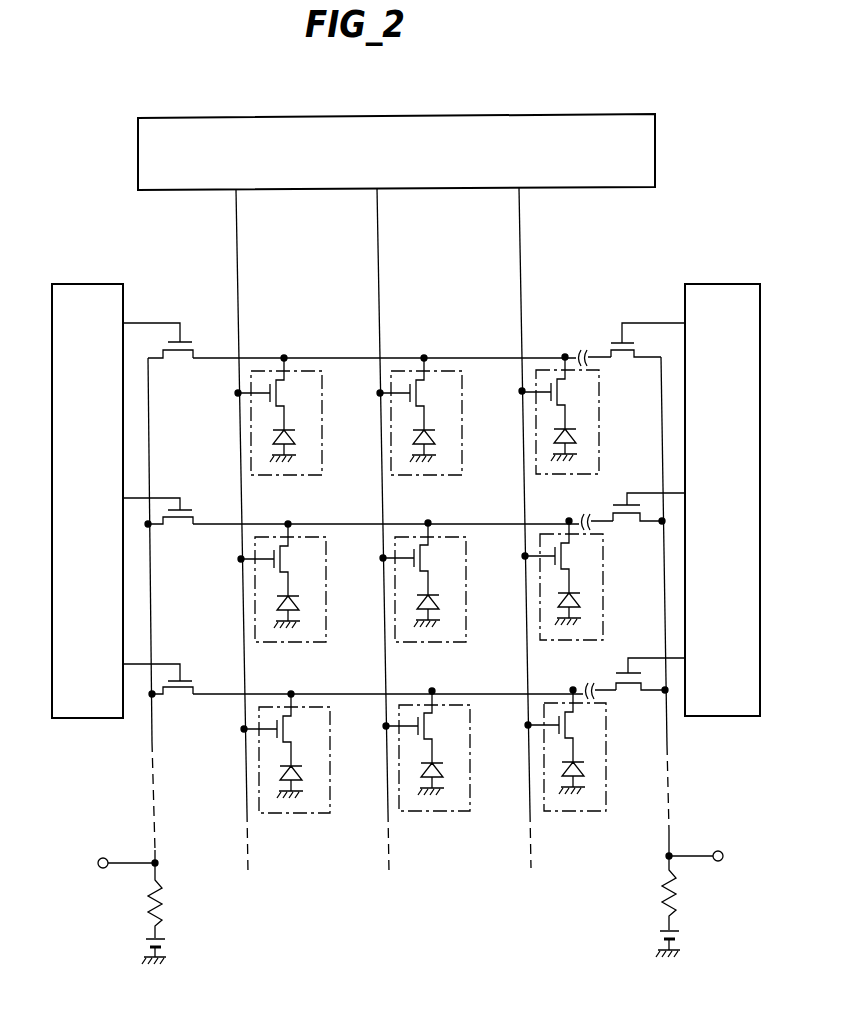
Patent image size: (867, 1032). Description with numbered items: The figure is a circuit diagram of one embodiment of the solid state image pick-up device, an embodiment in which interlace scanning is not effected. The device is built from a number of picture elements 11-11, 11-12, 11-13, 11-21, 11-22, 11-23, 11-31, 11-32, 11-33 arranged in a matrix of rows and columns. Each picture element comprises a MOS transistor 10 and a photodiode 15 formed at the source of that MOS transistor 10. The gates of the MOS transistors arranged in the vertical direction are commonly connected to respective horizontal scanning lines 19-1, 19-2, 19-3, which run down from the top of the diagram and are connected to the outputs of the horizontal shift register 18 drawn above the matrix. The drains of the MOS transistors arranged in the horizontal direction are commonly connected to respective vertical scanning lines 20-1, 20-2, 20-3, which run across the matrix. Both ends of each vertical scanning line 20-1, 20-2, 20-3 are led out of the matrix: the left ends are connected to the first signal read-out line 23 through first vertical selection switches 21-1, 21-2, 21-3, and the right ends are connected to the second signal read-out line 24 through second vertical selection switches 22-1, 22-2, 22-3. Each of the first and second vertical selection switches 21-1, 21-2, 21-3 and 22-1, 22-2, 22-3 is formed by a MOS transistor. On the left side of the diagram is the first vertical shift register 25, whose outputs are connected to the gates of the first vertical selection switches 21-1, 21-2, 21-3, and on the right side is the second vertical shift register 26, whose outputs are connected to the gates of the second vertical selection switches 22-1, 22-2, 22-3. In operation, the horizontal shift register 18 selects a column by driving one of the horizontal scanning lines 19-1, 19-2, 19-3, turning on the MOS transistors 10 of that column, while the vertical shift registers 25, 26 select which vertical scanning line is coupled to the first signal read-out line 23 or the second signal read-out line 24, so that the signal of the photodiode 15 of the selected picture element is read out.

The horizontal shift register 18 is at (530, 114).
The first vertical shift register 25 is at (98, 284).
The second vertical shift register 26 is at (724, 284).
The horizontal scanning line 19-1 is at (237, 242).
The horizontal scanning line 19-2 is at (378, 242).
The horizontal scanning line 19-3 is at (521, 240).
The vertical scanning line 20-1 is at (310, 357).
The vertical scanning line 20-2 is at (317, 523).
The vertical scanning line 20-3 is at (278, 692).
The first vertical selection switch 21-1 is at (186, 334).
The first vertical selection switch 21-2 is at (190, 507).
The first vertical selection switch 21-3 is at (190, 678).
The second vertical selection switch 22-1 is at (619, 335).
The second vertical selection switch 22-2 is at (615, 500).
The second vertical selection switch 22-3 is at (618, 670).
The picture element 11-11 is at (307, 416).
The picture element 11-12 is at (461, 372).
The picture element 11-13 is at (620, 424).
The picture element 11-21 is at (299, 656).
The picture element 11-22 is at (443, 643).
The picture element 11-23 is at (540, 543).
The picture element 11-31 is at (275, 815).
The picture element 11-32 is at (413, 813).
The picture element 11-33 is at (562, 812).
The MOS transistor 10 is at (286, 395).
The photodiode 15 is at (298, 438).
The first signal read-out line 23 is at (153, 743).
The second signal read-out line 24 is at (668, 742).